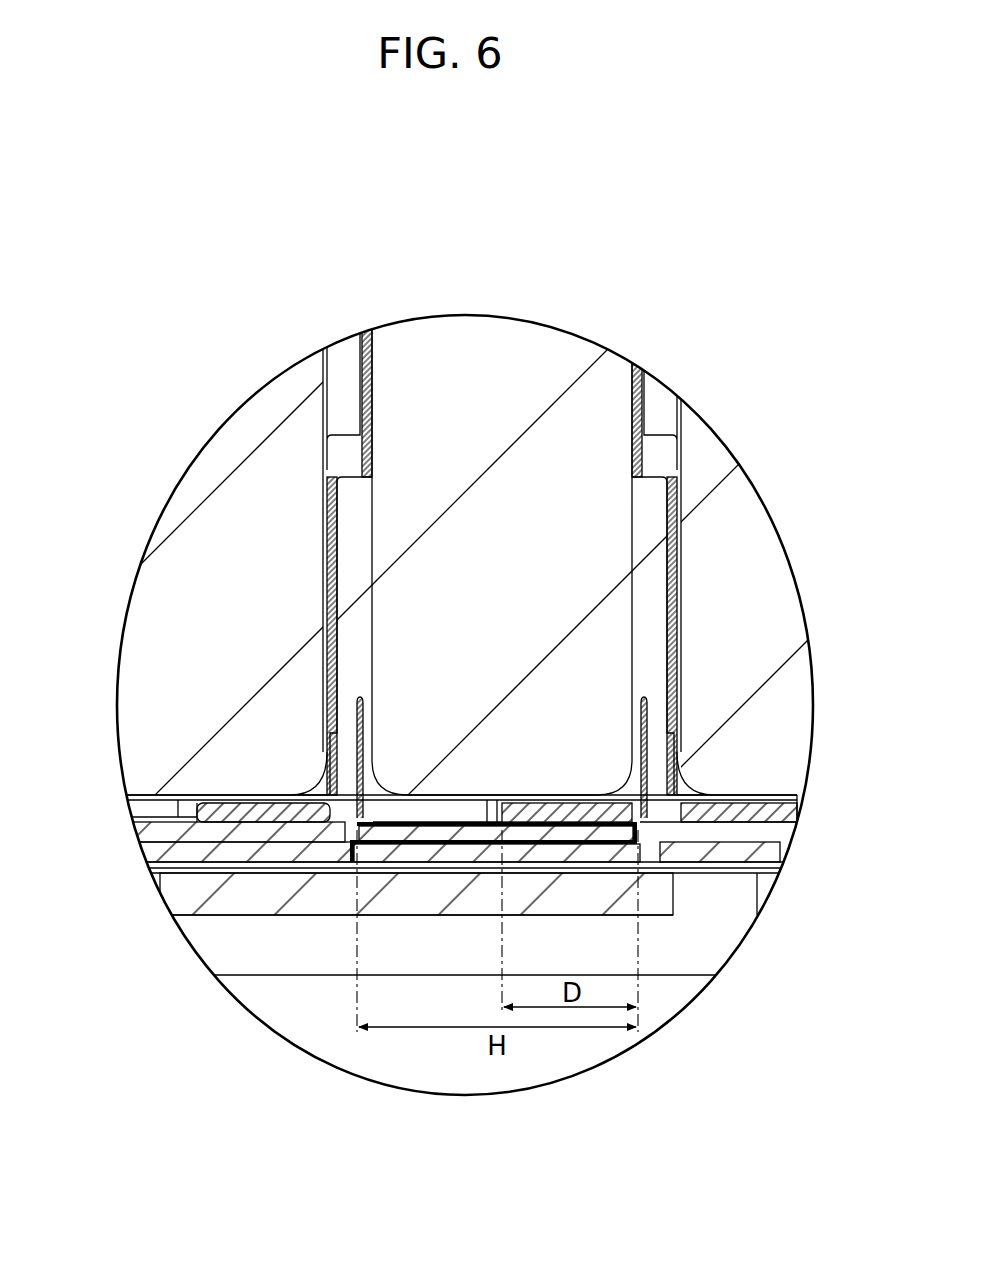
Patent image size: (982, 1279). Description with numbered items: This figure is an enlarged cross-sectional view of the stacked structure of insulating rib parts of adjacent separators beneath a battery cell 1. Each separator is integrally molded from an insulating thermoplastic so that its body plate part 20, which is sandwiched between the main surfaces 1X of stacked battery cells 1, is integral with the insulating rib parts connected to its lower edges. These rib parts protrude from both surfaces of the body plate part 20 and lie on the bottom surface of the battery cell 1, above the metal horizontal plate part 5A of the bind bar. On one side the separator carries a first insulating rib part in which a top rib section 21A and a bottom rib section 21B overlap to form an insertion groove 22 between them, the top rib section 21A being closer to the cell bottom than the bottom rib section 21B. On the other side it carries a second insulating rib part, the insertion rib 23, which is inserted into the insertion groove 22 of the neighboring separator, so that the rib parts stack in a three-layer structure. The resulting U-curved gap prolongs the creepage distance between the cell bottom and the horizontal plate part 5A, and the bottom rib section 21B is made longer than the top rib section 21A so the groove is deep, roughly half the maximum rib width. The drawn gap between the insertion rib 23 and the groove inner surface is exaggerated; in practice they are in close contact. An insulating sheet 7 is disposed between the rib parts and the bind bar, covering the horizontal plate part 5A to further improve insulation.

The battery cell 1 is at (488, 372).
The main surface 1X is at (370, 555).
The body plate part 20 is at (340, 453).
The top rib section 21A is at (233, 805).
The bottom rib section 21B is at (183, 853).
The insertion groove 22 is at (275, 870).
The insertion rib 23 is at (262, 818).
The horizontal plate part 5A is at (250, 960).
The insulating sheet 7 is at (217, 883).